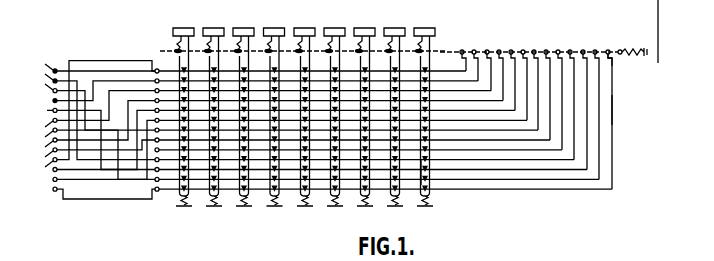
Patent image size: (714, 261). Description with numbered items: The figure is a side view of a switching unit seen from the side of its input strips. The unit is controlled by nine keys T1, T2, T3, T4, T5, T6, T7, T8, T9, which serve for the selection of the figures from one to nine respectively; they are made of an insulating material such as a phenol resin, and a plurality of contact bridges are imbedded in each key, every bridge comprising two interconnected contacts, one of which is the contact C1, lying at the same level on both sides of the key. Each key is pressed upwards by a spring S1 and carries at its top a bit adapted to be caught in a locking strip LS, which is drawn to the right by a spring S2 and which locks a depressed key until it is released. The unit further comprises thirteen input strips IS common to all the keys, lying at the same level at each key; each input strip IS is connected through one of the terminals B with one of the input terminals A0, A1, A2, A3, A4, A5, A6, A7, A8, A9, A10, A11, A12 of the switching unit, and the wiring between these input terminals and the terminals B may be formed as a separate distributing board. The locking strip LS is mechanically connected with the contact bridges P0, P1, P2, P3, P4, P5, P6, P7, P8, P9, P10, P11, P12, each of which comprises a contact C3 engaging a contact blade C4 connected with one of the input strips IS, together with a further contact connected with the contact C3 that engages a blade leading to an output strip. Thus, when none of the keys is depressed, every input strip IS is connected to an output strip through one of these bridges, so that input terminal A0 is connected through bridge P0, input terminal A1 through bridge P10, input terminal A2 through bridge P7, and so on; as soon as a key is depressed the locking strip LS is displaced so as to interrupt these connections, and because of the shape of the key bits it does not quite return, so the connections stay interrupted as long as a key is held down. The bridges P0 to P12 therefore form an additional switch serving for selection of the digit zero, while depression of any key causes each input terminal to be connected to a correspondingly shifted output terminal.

The key T1 is at (419, 105).
The key T2 is at (389, 105).
The key T3 is at (359, 105).
The key T4 is at (329, 105).
The key T5 is at (299, 105).
The key T6 is at (269, 105).
The key T7 is at (238, 105).
The key T8 is at (208, 105).
The key T9 is at (178, 105).
The spring S1 is at (308, 204).
The spring S2 is at (643, 49).
The locking strip LS is at (163, 50).
The input strips IS is at (494, 172).
The contact C1 is at (428, 175).
The contact C3 is at (614, 60).
The contact blade C4 is at (614, 110).
The terminals B is at (154, 68).
The input terminal A0 is at (55, 69).
The input terminal A1 is at (43, 60).
The input terminal A2 is at (93, 114).
The input terminal A3 is at (93, 107).
The input terminal A4 is at (93, 125).
The input terminal A5 is at (93, 114).
The input terminal A6 is at (93, 153).
The input terminal A7 is at (93, 139).
The input terminal A8 is at (93, 168).
The input terminal A9 is at (94, 138).
The input terminal A10 is at (58, 171).
The input terminal A11 is at (58, 182).
The input terminal A12 is at (54, 192).
The contact bridge P0 is at (571, 50).
The contact bridge P1 is at (583, 50).
The contact bridge P2 is at (596, 50).
The contact bridge P3 is at (608, 50).
The contact bridge P4 is at (462, 50).
The contact bridge P5 is at (475, 50).
The contact bridge P6 is at (487, 50).
The contact bridge P7 is at (500, 50).
The contact bridge P8 is at (511, 50).
The contact bridge P9 is at (524, 50).
The contact bridge P10 is at (534, 50).
The contact bridge P11 is at (547, 50).
The contact bridge P12 is at (558, 50).